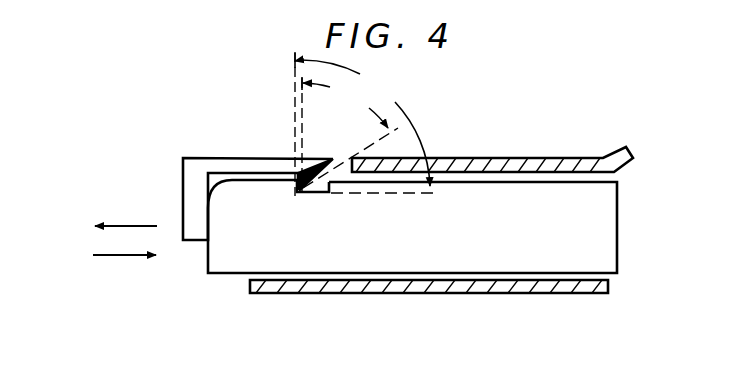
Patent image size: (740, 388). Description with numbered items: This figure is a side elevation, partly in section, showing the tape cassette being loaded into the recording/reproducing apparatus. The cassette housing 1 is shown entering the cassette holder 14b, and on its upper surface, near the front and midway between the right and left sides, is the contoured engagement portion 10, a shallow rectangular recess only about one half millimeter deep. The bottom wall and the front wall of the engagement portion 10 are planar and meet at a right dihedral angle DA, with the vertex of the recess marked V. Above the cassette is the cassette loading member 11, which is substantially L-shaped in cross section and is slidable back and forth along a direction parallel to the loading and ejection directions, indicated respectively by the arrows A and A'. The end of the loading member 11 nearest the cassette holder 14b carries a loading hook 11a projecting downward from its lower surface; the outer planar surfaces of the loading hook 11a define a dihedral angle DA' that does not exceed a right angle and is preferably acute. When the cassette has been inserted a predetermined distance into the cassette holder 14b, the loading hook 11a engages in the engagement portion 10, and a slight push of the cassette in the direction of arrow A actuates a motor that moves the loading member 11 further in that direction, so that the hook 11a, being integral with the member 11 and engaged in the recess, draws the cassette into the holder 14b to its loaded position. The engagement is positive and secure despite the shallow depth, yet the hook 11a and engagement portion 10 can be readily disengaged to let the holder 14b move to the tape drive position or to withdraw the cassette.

The cassette housing 1 is at (617, 222).
The contoured engagement portion 10 is at (317, 194).
The cassette loading member 11 is at (183, 172).
The loading hook 11a is at (321, 161).
The cassette holder 14b is at (393, 294).
The groove apex V is at (295, 194).
The dihedral angle DA is at (362, 119).
The dihedral angle of the loading hook DA' is at (345, 102).
The loading direction arrow A is at (112, 225).
The ejection direction arrow A' is at (111, 257).